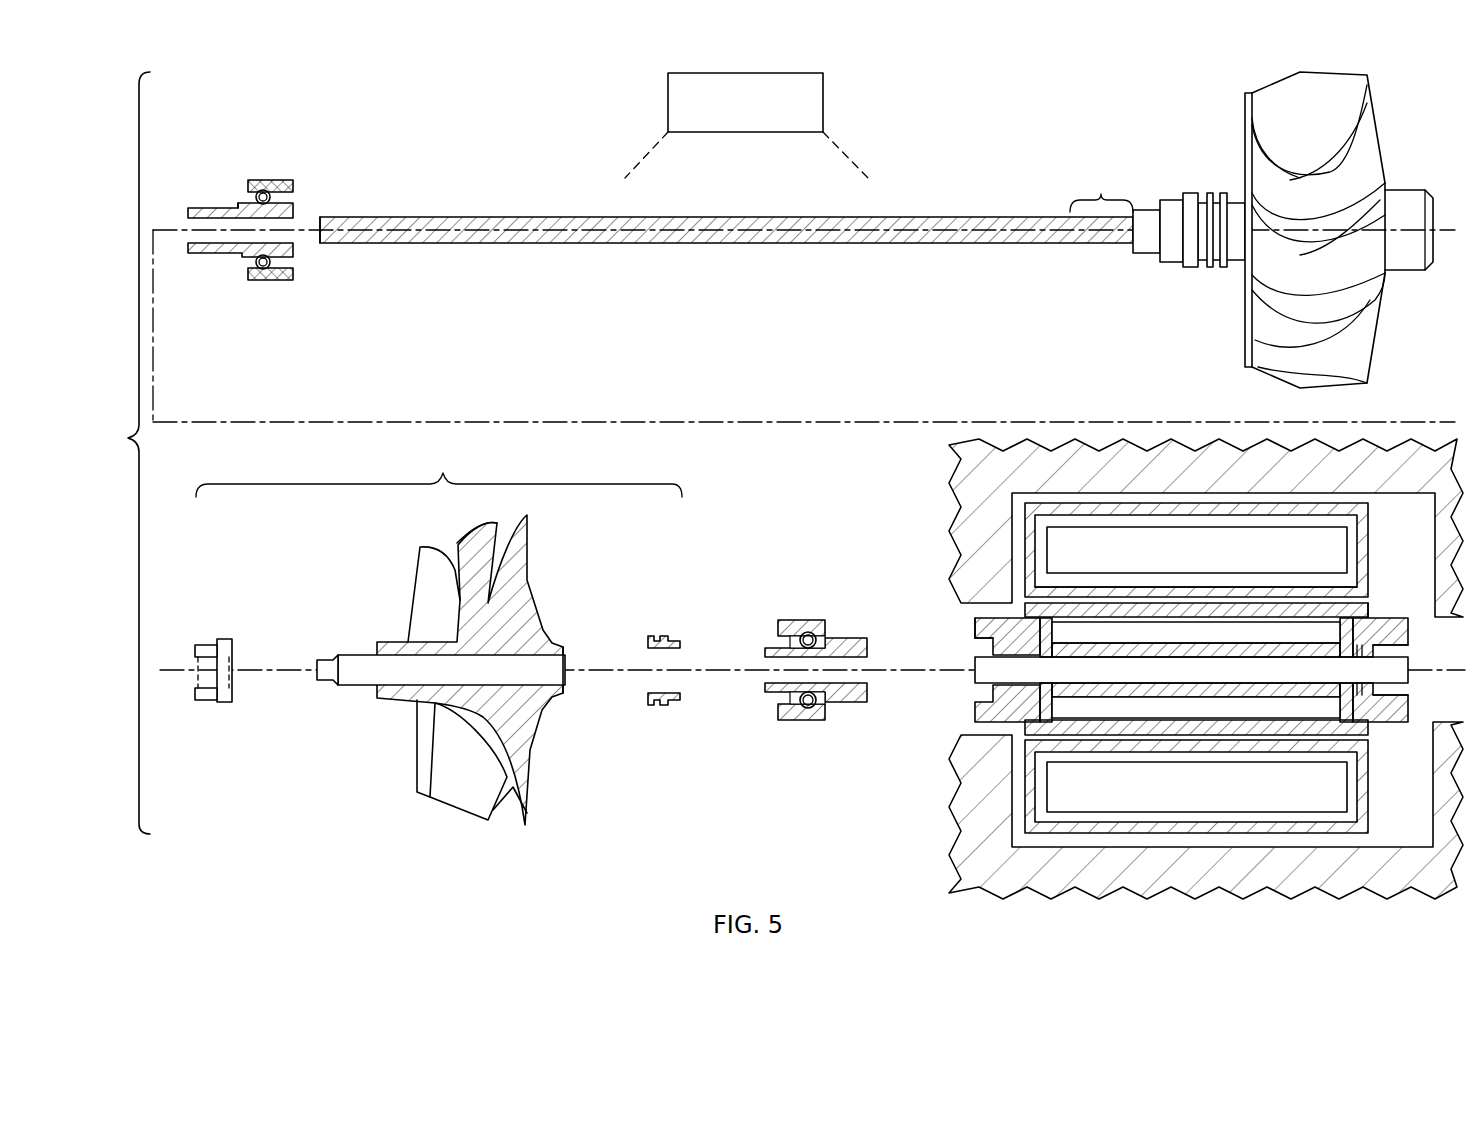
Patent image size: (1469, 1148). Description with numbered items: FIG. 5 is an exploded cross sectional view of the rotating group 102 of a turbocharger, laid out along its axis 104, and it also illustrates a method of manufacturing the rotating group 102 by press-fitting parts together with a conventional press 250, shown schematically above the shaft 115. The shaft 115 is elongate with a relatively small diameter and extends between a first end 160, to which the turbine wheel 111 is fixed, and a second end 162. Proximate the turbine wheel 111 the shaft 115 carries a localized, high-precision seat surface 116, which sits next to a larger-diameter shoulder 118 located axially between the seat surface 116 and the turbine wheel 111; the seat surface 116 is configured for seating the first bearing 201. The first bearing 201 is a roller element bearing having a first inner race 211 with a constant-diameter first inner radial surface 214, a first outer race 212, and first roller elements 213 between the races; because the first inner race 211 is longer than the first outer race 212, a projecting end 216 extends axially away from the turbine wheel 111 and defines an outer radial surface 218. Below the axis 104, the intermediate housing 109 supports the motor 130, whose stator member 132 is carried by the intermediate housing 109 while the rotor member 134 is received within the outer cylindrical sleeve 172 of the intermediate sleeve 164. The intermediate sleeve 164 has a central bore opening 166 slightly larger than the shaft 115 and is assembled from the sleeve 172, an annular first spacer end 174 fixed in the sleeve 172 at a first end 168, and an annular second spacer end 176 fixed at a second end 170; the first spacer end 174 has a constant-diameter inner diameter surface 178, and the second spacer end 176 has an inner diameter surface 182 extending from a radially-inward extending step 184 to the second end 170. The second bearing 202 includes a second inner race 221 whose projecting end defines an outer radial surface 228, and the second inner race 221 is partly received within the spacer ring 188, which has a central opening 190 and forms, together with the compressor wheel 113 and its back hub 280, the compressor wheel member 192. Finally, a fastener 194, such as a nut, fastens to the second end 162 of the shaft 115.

The rotating group 102 is at (128, 438).
The axis 104 is at (735, 422).
The intermediate housing 109 is at (935, 490).
The turbine wheel 111 is at (1362, 340).
The compressor wheel 113 is at (428, 737).
The shaft 115 is at (728, 217).
The seat surface 116 is at (1101, 184).
The shoulder 118 is at (1146, 253).
The motor 130 is at (1055, 545).
The stator member 132 is at (1197, 669).
The rotor member 134 is at (1135, 625).
The first end 160 is at (1428, 216).
The second end 162 is at (320, 220).
The intermediate sleeve 164 is at (1380, 610).
The central bore opening 166 is at (1210, 680).
The first end 168 is at (1407, 632).
The second end 170 is at (976, 625).
The outer cylindrical sleeve 172 is at (1272, 610).
The first spacer end 174 is at (1397, 630).
The second spacer end 176 is at (1000, 622).
The inner diameter surface 178 is at (1390, 647).
The inner diameter surface 182 is at (985, 640).
The radially-inward extending step 184 is at (993, 695).
The spacer ring 188 is at (652, 702).
The central opening 190 is at (666, 652).
The compressor wheel member 192 is at (439, 469).
The fastener 194 is at (205, 692).
The first bearing 201 is at (190, 200).
The second bearing 202 is at (780, 610).
The first inner race 211 is at (188, 212).
The first outer race 212 is at (268, 180).
The first roller elements 213 is at (270, 197).
The first inner radial surface 214 is at (190, 243).
The projecting end 216 is at (235, 252).
The outer radial surface 218 is at (225, 207).
The second inner race 221 is at (850, 694).
The outer radial surface 228 is at (847, 638).
The press 250 is at (823, 104).
The back hub 280 is at (565, 695).